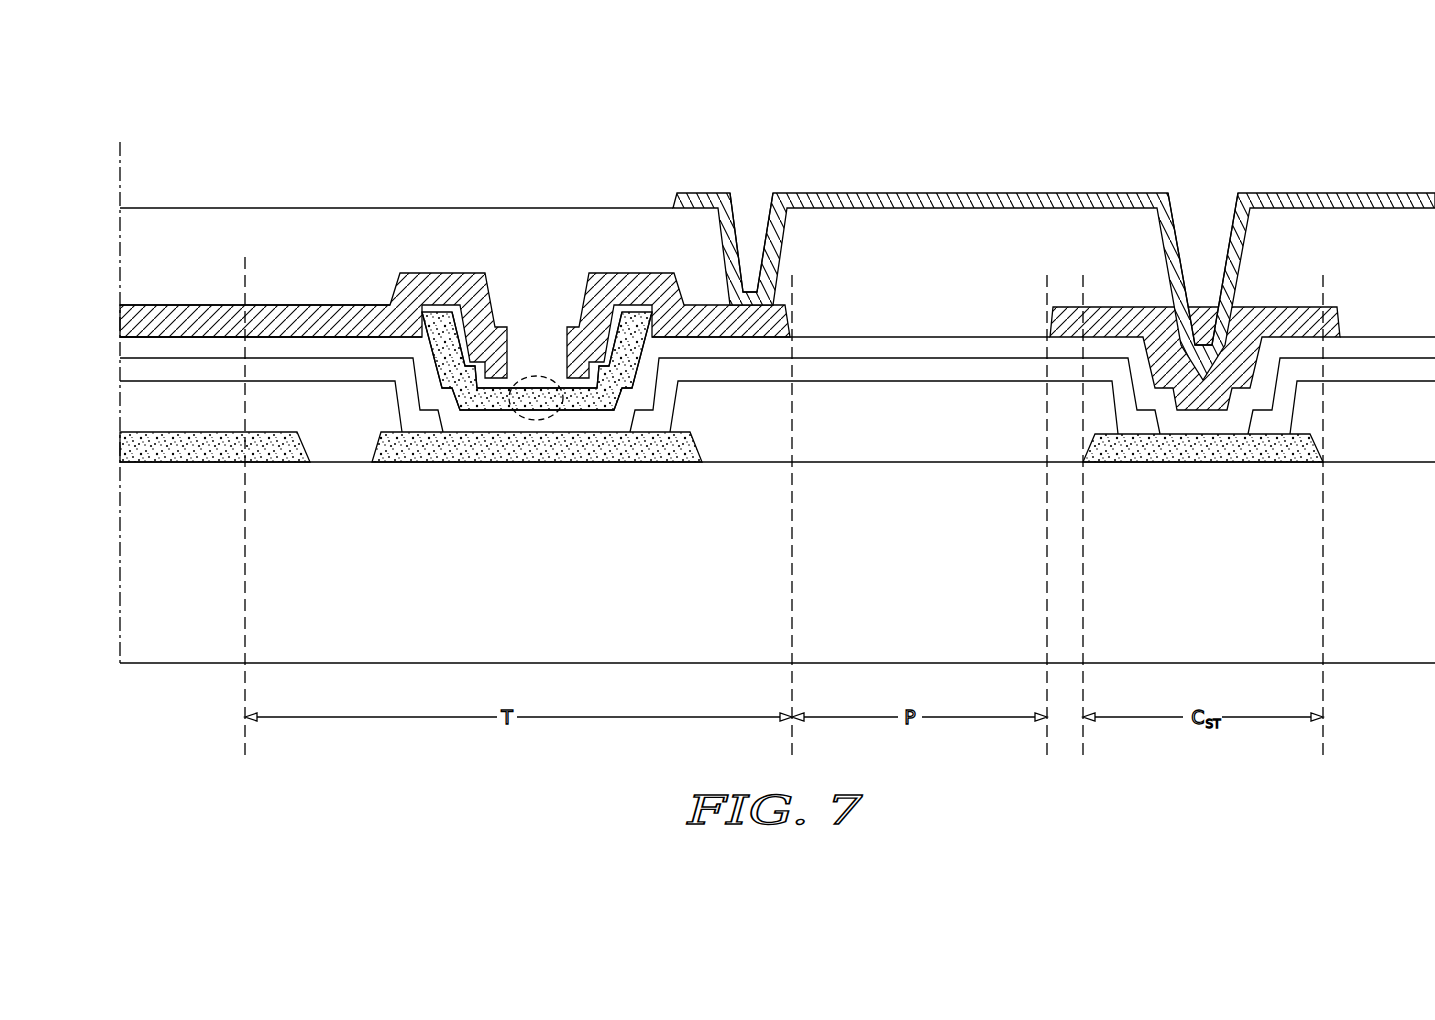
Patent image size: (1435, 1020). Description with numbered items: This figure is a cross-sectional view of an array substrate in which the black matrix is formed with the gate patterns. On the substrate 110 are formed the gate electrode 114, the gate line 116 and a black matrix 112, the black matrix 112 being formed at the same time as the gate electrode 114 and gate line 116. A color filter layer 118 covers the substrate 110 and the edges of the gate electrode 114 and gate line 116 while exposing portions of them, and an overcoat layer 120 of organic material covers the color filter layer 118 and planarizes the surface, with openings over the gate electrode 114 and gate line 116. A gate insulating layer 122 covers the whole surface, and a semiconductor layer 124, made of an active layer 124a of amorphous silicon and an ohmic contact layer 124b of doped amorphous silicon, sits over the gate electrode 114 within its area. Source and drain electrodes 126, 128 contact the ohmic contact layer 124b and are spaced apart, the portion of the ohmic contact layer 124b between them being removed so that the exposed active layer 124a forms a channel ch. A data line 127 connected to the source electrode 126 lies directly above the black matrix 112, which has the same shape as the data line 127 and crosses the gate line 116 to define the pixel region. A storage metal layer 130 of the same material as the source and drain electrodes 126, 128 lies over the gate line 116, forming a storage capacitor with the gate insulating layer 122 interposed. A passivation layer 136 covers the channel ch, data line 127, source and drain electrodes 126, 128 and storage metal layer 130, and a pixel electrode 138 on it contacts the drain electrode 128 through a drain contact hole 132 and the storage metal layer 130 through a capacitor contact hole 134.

The substrate 110 is at (926, 613).
The black matrix 112 is at (160, 436).
The gate electrode 114 is at (522, 462).
The gate line 116 is at (1228, 452).
The color filter layer 118 is at (343, 440).
The overcoat layer 120 is at (220, 368).
The gate insulating layer 122 is at (183, 345).
The semiconductor layer 124 is at (505, 230).
The active layer 124a is at (418, 312).
The ohmic contact layer 124b is at (437, 323).
The source electrode 126 is at (319, 234).
The data line 127 is at (143, 323).
The drain electrode 128 is at (618, 273).
The storage metal layer 130 is at (1133, 310).
The drain contact hole 132 is at (755, 190).
The capacitor contact hole 134 is at (1200, 190).
The passivation layer 136 is at (240, 230).
The pixel electrode 138 is at (1054, 226).
The channel ch is at (540, 376).